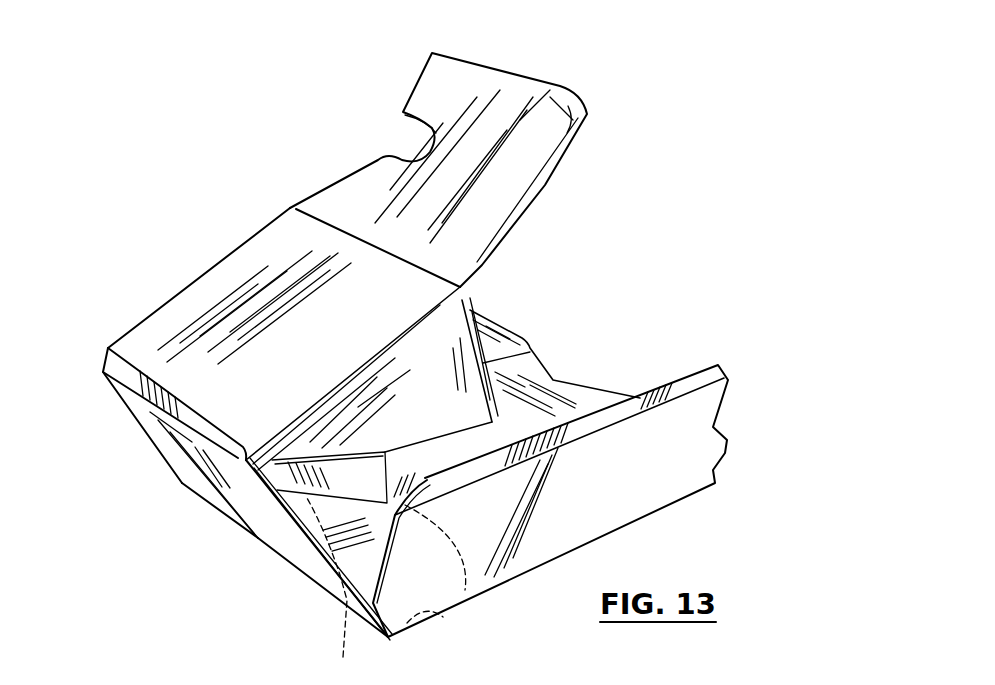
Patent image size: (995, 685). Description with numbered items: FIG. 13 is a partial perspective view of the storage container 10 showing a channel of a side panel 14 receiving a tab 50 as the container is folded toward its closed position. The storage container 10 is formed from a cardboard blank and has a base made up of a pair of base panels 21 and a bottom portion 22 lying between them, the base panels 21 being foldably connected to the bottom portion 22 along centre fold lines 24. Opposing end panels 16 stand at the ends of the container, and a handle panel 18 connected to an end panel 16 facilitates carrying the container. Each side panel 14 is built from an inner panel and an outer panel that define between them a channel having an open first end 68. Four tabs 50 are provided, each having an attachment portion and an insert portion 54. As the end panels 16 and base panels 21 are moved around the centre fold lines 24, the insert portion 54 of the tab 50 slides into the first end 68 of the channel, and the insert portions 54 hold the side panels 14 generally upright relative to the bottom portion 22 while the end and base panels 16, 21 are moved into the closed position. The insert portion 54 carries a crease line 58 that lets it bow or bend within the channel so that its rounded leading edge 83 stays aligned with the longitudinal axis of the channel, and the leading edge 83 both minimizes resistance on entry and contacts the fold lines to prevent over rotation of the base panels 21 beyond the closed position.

The storage container 10 is at (720, 32).
The side panel 14 is at (680, 510).
The end panel 16 is at (153, 323).
The handle panel 18 is at (545, 84).
The base panel 21 is at (180, 484).
The bottom portion 22 is at (523, 357).
The centre fold line 24 is at (237, 521).
The tab 50 is at (333, 613).
The insert portion 54 is at (445, 590).
The crease line 58 is at (341, 591).
The first end 68 is at (366, 565).
The leading edge 83 is at (443, 617).